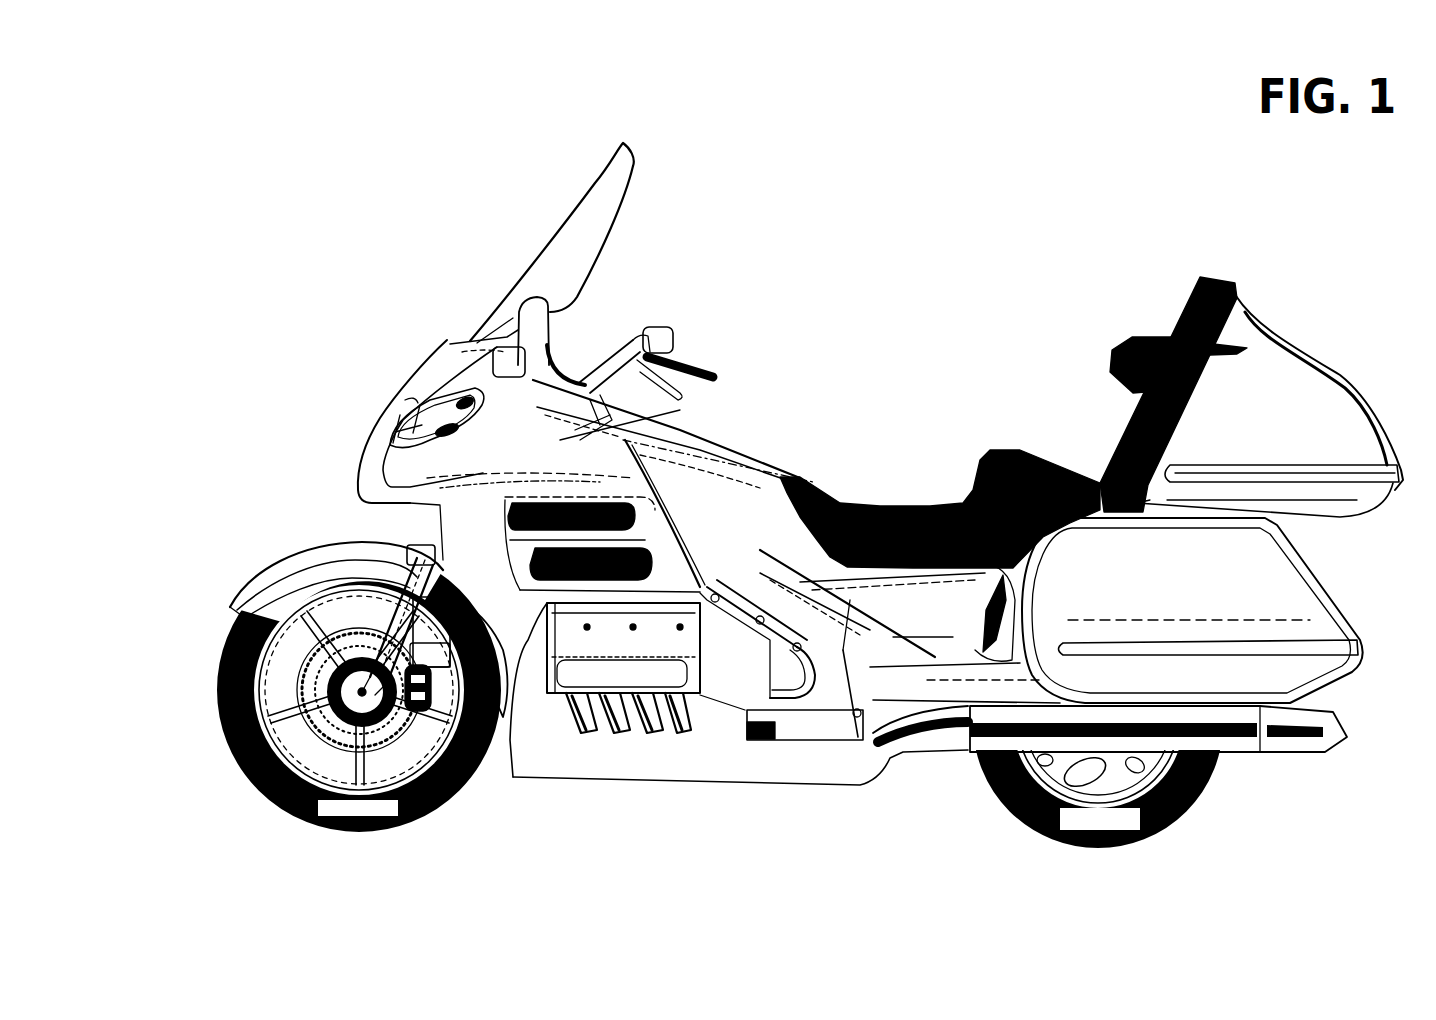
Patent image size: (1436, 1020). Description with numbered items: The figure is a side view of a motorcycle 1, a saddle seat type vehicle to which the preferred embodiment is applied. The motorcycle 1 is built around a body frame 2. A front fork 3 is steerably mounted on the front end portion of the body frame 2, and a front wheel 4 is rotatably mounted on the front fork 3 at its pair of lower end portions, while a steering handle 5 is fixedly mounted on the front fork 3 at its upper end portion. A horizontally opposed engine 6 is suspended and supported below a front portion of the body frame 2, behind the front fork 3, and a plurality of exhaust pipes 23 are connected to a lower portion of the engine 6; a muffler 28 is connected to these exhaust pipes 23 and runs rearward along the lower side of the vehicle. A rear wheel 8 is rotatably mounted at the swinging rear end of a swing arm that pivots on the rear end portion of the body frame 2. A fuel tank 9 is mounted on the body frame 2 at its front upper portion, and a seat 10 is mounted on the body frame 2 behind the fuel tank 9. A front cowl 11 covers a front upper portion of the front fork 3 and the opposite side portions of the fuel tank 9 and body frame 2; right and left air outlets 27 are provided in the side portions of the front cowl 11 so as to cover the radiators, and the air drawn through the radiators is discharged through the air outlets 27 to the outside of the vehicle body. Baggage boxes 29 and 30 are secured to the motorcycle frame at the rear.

The motorcycle 1 is at (450, 346).
The body frame 2 is at (835, 723).
The front fork 3 is at (400, 600).
The front wheel 4 is at (230, 608).
The steering handle 5 is at (697, 360).
The horizontally opposed engine 6 is at (567, 673).
The rear wheel 8 is at (1193, 817).
The fuel tank 9 is at (740, 460).
The seat 10 is at (870, 500).
The front cowl 11 is at (387, 407).
The exhaust pipes 23 is at (597, 733).
The air outlets 27 is at (638, 512).
The muffler 28 is at (1272, 750).
The baggage box 29 is at (1277, 585).
The baggage box 30 is at (1283, 383).